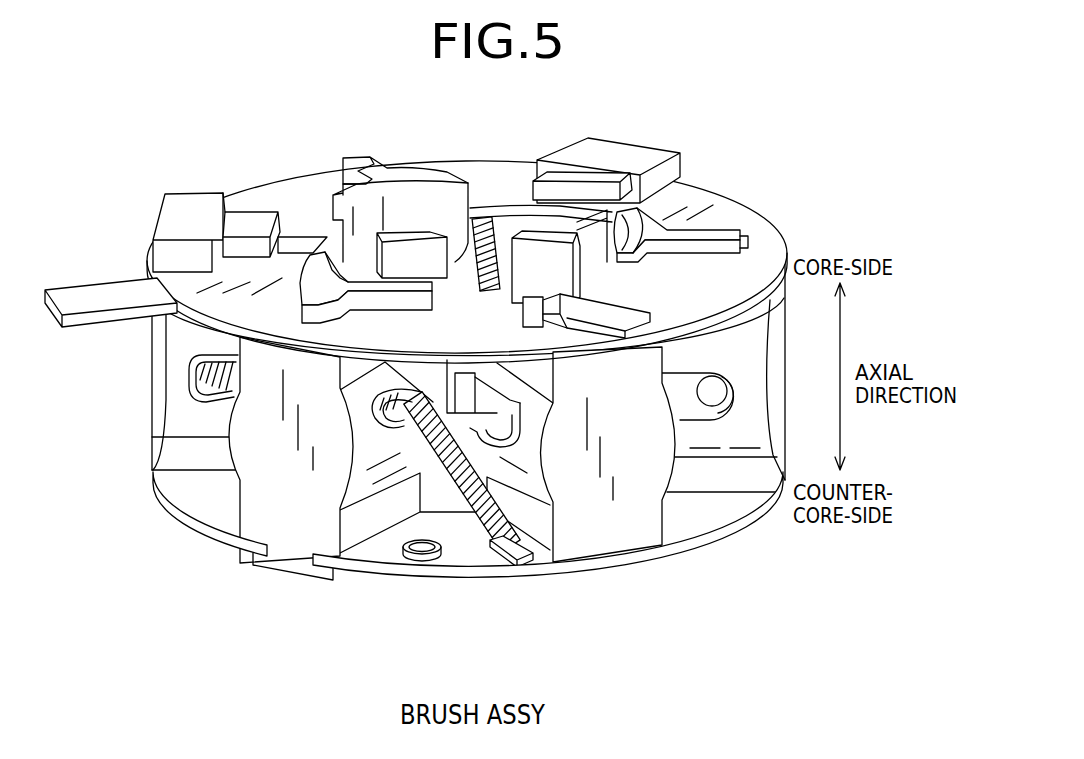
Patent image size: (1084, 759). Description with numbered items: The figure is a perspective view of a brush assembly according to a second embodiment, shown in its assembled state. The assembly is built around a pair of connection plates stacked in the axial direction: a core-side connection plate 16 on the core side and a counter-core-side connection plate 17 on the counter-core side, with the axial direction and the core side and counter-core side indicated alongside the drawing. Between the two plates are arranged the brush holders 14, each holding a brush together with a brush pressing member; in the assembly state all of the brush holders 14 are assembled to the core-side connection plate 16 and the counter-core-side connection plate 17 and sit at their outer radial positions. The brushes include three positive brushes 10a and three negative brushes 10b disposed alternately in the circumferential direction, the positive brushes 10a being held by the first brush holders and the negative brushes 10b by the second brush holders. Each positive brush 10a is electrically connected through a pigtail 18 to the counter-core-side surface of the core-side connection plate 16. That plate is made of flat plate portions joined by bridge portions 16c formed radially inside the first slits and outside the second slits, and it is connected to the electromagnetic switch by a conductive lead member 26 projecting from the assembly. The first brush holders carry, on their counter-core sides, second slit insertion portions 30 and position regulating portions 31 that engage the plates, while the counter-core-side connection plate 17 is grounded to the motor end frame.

The positive brush 10a is at (547, 263).
The negative brush 10b is at (415, 257).
The brush holder 14 is at (270, 502).
The core-side connection plate 16 is at (484, 165).
The bridge portion 16c is at (603, 153).
The counter-core-side connection plate 17 is at (462, 552).
The pigtail 18 is at (445, 474).
The conductive lead member 26 is at (95, 295).
The second slit insertion portion 30 is at (713, 243).
The position regulating portion 31 is at (643, 220).